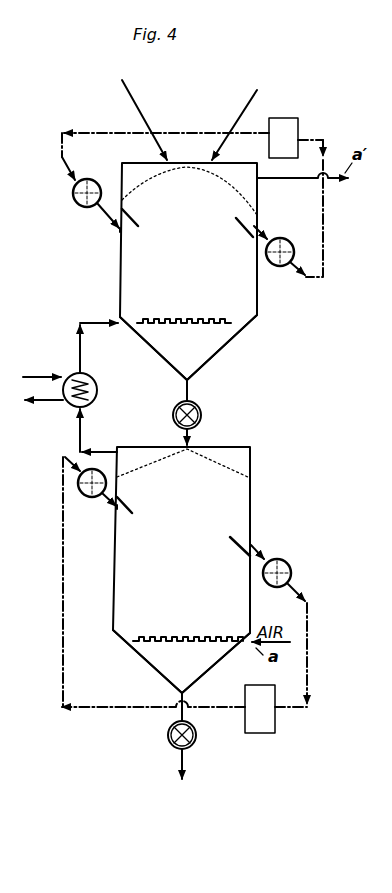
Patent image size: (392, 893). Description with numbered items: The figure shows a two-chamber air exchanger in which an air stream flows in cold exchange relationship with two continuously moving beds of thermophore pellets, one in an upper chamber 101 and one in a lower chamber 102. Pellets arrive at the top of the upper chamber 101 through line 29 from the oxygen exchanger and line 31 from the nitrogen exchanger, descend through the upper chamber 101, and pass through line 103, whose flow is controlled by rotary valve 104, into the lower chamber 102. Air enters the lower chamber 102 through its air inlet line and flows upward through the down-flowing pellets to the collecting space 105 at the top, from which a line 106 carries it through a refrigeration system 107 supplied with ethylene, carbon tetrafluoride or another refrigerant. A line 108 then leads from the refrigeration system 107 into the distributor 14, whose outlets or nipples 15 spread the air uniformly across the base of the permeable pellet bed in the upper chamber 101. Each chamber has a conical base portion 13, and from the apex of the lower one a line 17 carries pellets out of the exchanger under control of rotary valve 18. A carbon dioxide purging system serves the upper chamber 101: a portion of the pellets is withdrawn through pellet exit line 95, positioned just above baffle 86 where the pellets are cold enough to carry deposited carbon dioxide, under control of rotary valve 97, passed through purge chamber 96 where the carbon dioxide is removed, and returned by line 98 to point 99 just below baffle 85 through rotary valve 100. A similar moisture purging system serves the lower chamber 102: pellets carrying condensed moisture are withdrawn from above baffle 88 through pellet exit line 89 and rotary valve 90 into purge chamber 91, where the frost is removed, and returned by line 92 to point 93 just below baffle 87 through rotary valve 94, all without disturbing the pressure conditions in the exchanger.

The line 29 is at (135, 92).
The line 31 is at (247, 98).
The line 98 is at (84, 131).
The purge chamber 96 is at (296, 197).
The rotary valve 100 is at (78, 206).
The point 99 is at (118, 233).
The baffle 85 is at (139, 222).
The baffle 86 is at (243, 232).
The pellet exit line 95 is at (268, 234).
The rotary valve 97 is at (286, 268).
The upper chamber 101 is at (258, 296).
The outlets or nipples 15 is at (191, 322).
The distributor 14 is at (177, 329).
The line 108 is at (83, 356).
The refrigeration system 107 is at (99, 388).
The line 106 is at (94, 426).
The line 103 is at (195, 385).
The rotary valve 104 is at (203, 412).
The collecting space 105 is at (250, 460).
The lower chamber 102 is at (252, 504).
The rotary valve 94 is at (88, 498).
The point 93 is at (115, 509).
The baffle 87 is at (133, 508).
The baffle 88 is at (240, 546).
The pellet exit line 89 is at (263, 560).
The rotary valve 90 is at (292, 570).
The conical base portion 13 is at (131, 657).
The line 92 is at (92, 710).
The purge chamber 91 is at (276, 668).
The rotary valve 18 is at (197, 737).
The line 17 is at (190, 765).